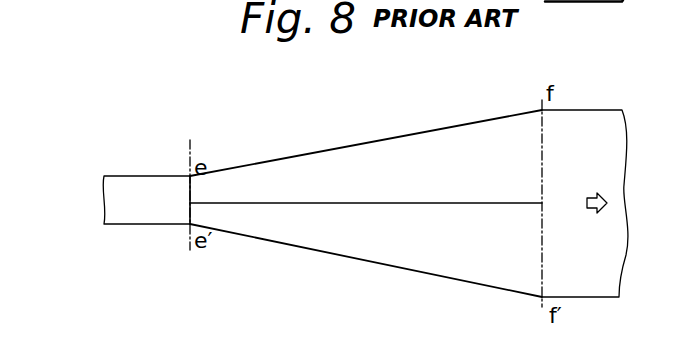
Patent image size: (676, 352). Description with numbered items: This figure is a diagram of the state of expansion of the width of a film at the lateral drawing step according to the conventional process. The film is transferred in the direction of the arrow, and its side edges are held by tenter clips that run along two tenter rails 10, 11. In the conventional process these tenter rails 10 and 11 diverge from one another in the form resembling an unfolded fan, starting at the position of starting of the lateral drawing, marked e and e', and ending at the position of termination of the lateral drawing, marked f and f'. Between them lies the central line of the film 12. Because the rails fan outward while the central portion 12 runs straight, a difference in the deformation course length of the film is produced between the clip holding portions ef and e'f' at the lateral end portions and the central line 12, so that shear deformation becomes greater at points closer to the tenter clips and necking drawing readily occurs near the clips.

The tenter rail 10 is at (367, 142).
The tenter rail 11 is at (352, 257).
The central line of the film 12 is at (435, 203).